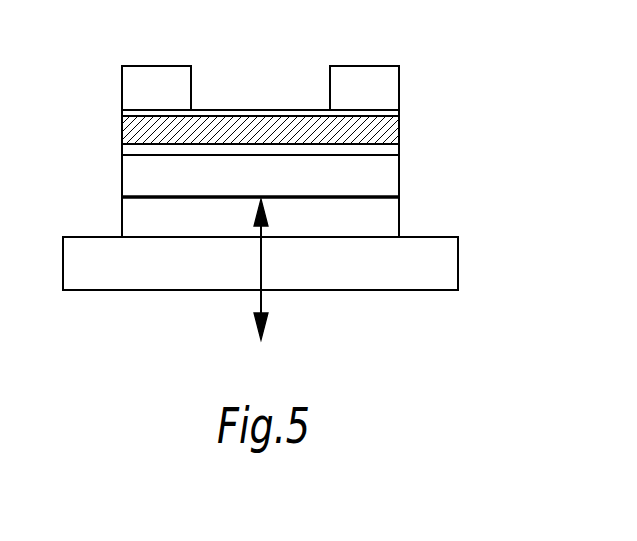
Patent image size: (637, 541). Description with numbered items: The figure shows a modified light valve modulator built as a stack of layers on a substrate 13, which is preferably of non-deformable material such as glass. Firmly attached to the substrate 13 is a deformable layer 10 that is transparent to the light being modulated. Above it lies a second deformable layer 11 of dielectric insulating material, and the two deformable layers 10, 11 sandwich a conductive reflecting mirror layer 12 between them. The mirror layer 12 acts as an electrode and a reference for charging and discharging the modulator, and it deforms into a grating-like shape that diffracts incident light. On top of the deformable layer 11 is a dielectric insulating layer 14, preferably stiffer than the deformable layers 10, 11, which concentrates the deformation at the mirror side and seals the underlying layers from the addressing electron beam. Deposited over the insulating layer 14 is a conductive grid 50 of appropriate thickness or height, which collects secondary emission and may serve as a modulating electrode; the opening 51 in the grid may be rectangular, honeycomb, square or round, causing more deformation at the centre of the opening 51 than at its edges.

The deformable layer 10 is at (380, 217).
The deformable layer 11 is at (383, 175).
The conductive reflecting mirror layer 12 is at (122, 196).
The substrate 13 is at (450, 263).
The dielectric insulating layer 14 is at (386, 135).
The conductive grid 50 is at (155, 66).
The opening 51 is at (272, 97).